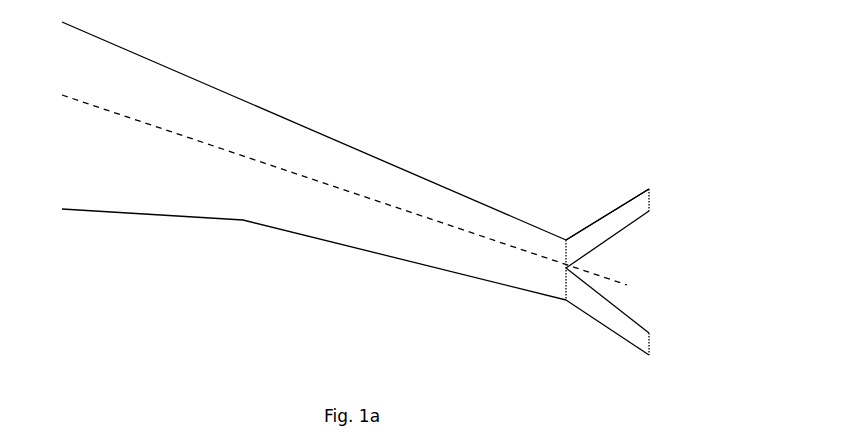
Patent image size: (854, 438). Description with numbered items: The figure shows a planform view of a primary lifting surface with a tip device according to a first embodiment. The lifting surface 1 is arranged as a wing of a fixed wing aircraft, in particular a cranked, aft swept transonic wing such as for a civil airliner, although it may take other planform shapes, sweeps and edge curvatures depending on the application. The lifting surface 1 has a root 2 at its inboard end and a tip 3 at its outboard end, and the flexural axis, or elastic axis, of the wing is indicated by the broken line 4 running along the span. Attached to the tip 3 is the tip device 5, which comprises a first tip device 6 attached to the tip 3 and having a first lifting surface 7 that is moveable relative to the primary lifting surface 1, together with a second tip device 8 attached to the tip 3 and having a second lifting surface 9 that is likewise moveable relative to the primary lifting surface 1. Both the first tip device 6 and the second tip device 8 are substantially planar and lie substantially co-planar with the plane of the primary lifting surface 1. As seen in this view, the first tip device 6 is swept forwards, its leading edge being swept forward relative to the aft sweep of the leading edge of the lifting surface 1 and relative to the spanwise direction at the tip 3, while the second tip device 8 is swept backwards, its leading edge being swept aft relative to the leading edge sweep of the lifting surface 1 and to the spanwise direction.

The lifting surface 1 is at (384, 124).
The root 2 is at (62, 226).
The tip 3 is at (562, 318).
The flexural axis 4 is at (532, 276).
The tip device 5 is at (630, 163).
The first tip device 6 is at (673, 187).
The first lifting surface 7 is at (588, 209).
The second tip device 8 is at (663, 330).
The second lifting surface 9 is at (621, 324).